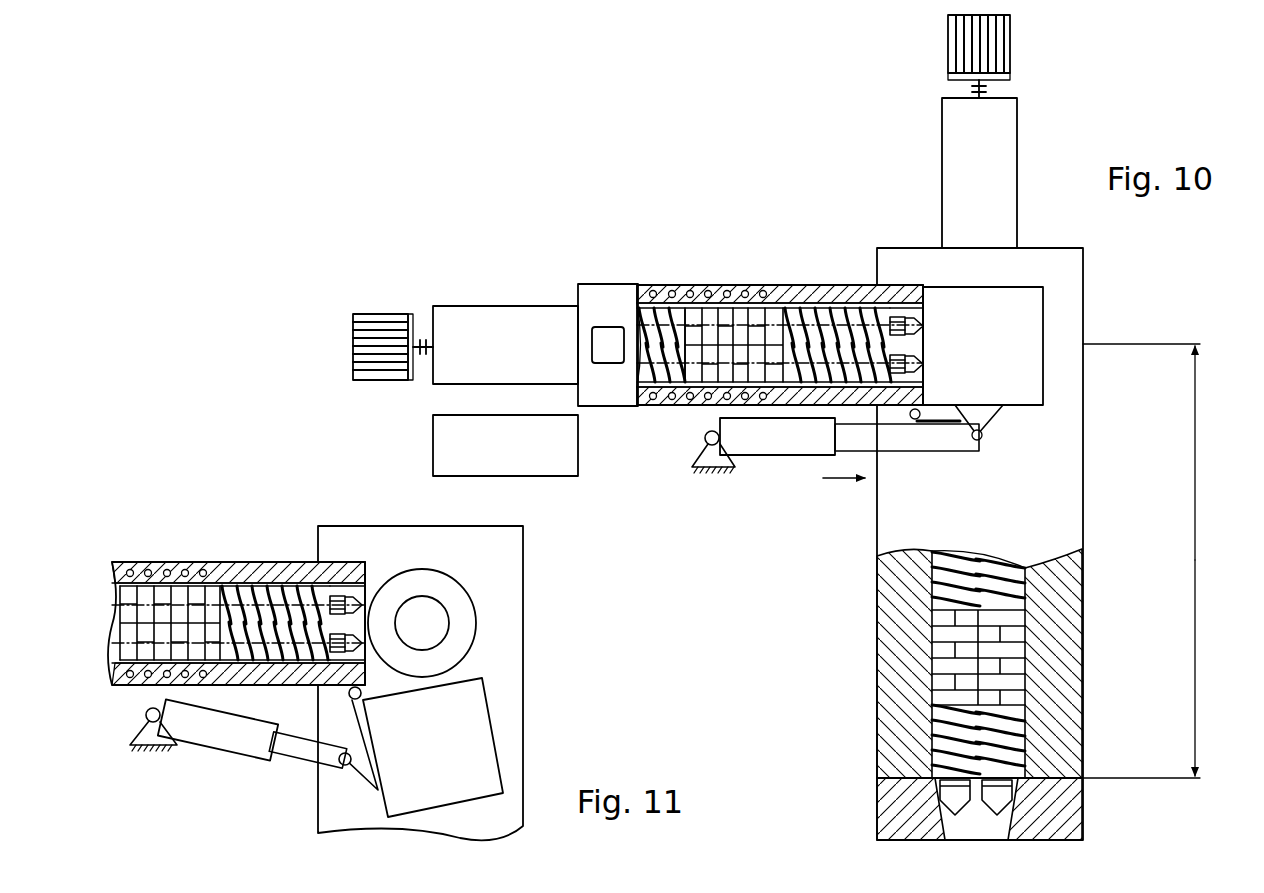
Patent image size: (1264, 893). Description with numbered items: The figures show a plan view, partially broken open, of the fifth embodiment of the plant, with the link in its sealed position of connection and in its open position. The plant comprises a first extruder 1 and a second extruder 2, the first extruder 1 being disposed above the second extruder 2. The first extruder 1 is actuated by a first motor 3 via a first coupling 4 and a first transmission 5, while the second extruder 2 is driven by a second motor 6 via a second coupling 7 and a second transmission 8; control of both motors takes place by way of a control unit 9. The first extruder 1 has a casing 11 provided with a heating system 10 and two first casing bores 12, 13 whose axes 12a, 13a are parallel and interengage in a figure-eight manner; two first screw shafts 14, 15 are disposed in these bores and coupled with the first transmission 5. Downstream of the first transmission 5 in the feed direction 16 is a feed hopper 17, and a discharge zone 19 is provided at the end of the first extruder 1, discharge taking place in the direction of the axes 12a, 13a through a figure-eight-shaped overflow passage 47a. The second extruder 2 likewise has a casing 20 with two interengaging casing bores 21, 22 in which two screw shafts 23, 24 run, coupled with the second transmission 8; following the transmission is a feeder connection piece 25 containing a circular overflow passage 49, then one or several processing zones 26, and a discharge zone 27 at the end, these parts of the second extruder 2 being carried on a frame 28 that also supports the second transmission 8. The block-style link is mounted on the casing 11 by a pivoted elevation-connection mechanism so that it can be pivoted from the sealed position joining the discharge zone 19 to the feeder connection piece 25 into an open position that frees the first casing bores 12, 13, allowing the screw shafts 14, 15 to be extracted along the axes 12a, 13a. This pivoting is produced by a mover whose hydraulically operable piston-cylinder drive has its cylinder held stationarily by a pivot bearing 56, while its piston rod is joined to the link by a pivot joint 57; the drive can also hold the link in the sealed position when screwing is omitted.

In FIG. 10, the first extruder 1 is at (679, 283).
In FIG. 11, the first extruder 1 is at (158, 556).
In FIG. 10, the second extruder 2 is at (1088, 662).
In FIG. 10, the first motor 3 is at (383, 314).
In FIG. 10, the first coupling 4 is at (424, 340).
In FIG. 10, the first transmission 5 is at (490, 306).
In FIG. 10, the second motor 6 is at (1010, 48).
In FIG. 10, the second coupling 7 is at (985, 90).
In FIG. 10, the second transmission 8 is at (1008, 178).
In FIG. 10, the control unit 9 is at (433, 443).
In FIG. 10, the heating system 10 is at (645, 289).
In FIG. 11, the heating system 10 is at (118, 566).
In FIG. 10, the casing 11 is at (654, 291).
In FIG. 11, the casing 11 is at (132, 566).
In FIG. 10, the first casing bore 12 is at (796, 320).
In FIG. 11, the first casing bore 12 is at (237, 592).
In FIG. 10, the axis 12a is at (759, 340).
In FIG. 11, the axis 12a is at (215, 605).
In FIG. 10, the first casing bore 13 is at (683, 390).
In FIG. 10, the axis 13a is at (709, 320).
In FIG. 10, the first screw shaft 14 is at (843, 330).
In FIG. 11, the first screw shaft 14 is at (288, 598).
In FIG. 10, the first screw shaft 15 is at (637, 378).
In FIG. 10, the feed direction 16 is at (840, 483).
In FIG. 10, the feed hopper 17 is at (610, 340).
In FIG. 10, the discharge zone 19 is at (916, 333).
In FIG. 11, the discharge zone 19 is at (358, 618).
In FIG. 10, the casing 20 is at (887, 619).
In FIG. 10, the casing bore 21 is at (933, 752).
In FIG. 10, the casing bore 22 is at (1025, 760).
In FIG. 10, the screw shaft 23 is at (953, 727).
In FIG. 10, the screw shaft 24 is at (950, 724).
In FIG. 11, the feeder connection piece 25 is at (476, 636).
In FIG. 10, the processing zones 26 is at (1157, 561).
In FIG. 10, the discharge zone 27 is at (995, 827).
In FIG. 10, the machine frame 28 is at (1060, 288).
In FIG. 10, the overflow passage 47a is at (917, 345).
In FIG. 11, the overflow passage 47a is at (372, 625).
In FIG. 11, the overflow passage 49 is at (423, 623).
In FIG. 10, the pivot bearing 56 is at (692, 460).
In FIG. 11, the pivot bearing 56 is at (133, 735).
In FIG. 10, the pivot joint 57 is at (990, 437).
In FIG. 11, the pivot joint 57 is at (352, 768).